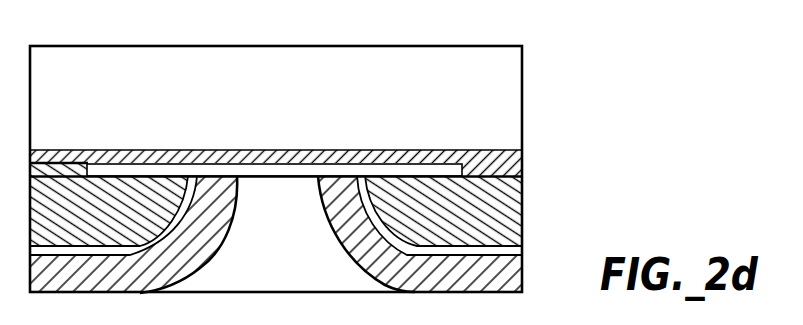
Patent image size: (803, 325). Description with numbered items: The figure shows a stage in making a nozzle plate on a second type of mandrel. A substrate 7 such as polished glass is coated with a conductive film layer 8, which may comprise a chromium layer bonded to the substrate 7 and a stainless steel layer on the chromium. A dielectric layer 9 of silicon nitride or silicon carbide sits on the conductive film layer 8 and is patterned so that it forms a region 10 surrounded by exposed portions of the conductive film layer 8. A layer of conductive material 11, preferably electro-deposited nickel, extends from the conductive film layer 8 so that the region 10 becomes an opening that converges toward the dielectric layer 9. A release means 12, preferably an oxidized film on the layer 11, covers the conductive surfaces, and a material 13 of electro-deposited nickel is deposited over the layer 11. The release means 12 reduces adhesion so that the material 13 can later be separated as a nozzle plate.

The substrate 7 is at (499, 46).
The conductive film layer 8 is at (522, 153).
The dielectric layer 9 is at (522, 164).
The region 10 is at (293, 238).
The layer of conductive material 11 is at (522, 220).
The release means 12 is at (522, 250).
The material 13 is at (522, 273).